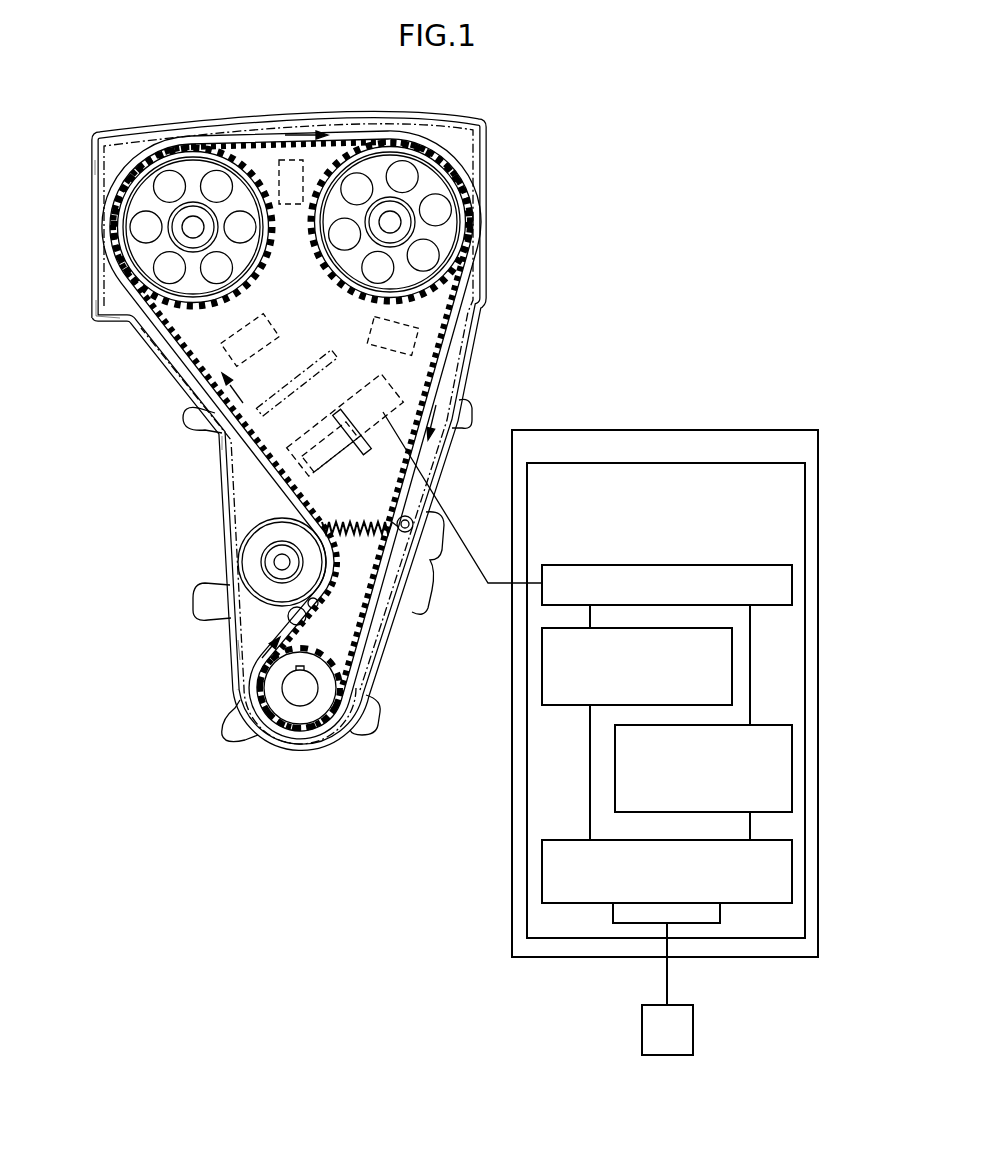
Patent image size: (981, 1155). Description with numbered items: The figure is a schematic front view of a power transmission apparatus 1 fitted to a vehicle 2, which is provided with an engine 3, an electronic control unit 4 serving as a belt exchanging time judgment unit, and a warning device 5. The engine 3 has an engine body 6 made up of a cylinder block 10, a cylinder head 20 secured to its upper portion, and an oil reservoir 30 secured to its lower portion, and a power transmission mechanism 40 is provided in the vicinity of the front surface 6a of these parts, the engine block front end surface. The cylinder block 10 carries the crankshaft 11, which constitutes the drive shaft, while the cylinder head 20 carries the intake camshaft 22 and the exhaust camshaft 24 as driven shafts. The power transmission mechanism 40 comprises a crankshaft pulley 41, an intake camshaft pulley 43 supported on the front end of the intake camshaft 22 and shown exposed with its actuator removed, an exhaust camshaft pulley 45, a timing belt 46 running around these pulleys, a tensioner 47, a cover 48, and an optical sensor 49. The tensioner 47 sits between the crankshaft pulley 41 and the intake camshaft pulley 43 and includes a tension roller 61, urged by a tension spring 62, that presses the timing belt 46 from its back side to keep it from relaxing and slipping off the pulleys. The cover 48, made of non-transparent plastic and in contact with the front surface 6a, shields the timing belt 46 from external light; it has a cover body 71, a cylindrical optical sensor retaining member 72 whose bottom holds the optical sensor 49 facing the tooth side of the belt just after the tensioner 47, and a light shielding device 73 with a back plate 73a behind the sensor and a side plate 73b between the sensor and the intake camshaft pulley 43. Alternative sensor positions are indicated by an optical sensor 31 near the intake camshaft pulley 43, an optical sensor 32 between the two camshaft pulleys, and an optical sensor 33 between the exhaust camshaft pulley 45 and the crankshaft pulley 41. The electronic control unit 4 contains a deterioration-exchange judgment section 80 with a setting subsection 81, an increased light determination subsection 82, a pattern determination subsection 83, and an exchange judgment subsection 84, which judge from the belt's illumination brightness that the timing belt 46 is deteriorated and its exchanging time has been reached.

The power transmission apparatus 1 is at (532, 358).
The vehicle 2 is at (603, 125).
The engine 3 is at (85, 88).
The electronic control unit 4 is at (718, 428).
The warning device 5 is at (693, 1030).
The engine body 6 is at (63, 605).
The front surface 6a is at (258, 640).
The cylinder block 10 is at (158, 503).
The crankshaft 11 is at (301, 690).
The cylinder head 20 is at (113, 425).
The intake camshaft 22 is at (190, 222).
The exhaust camshaft 24 is at (392, 218).
The oil reservoir 30 is at (147, 638).
The optical sensor 31 is at (272, 330).
The optical sensor 32 is at (292, 208).
The optical sensor 33 is at (372, 333).
The power transmission mechanism 40 is at (158, 546).
The crankshaft pulley 41 is at (280, 715).
The intake camshaft pulley 43 is at (135, 210).
The exhaust camshaft pulley 45 is at (373, 177).
The timing belt 46 is at (165, 352).
The tensioner 47 is at (445, 672).
The cover 48 is at (95, 168).
The optical sensor 49 is at (294, 477).
The tension roller 61 is at (305, 622).
The tension spring 62 is at (317, 600).
The cover body 71 is at (97, 312).
The optical sensor retaining member 72 is at (345, 480).
The light shielding device 73 is at (368, 363).
The back plate 73a is at (357, 412).
The side plate 73b is at (222, 442).
The deterioration-exchange judgment section 80 is at (757, 463).
The setting subsection 81 is at (770, 565).
The increased light determination subsection 82 is at (542, 663).
The pattern determination subsection 83 is at (762, 725).
The exchange judgment subsection 84 is at (568, 840).